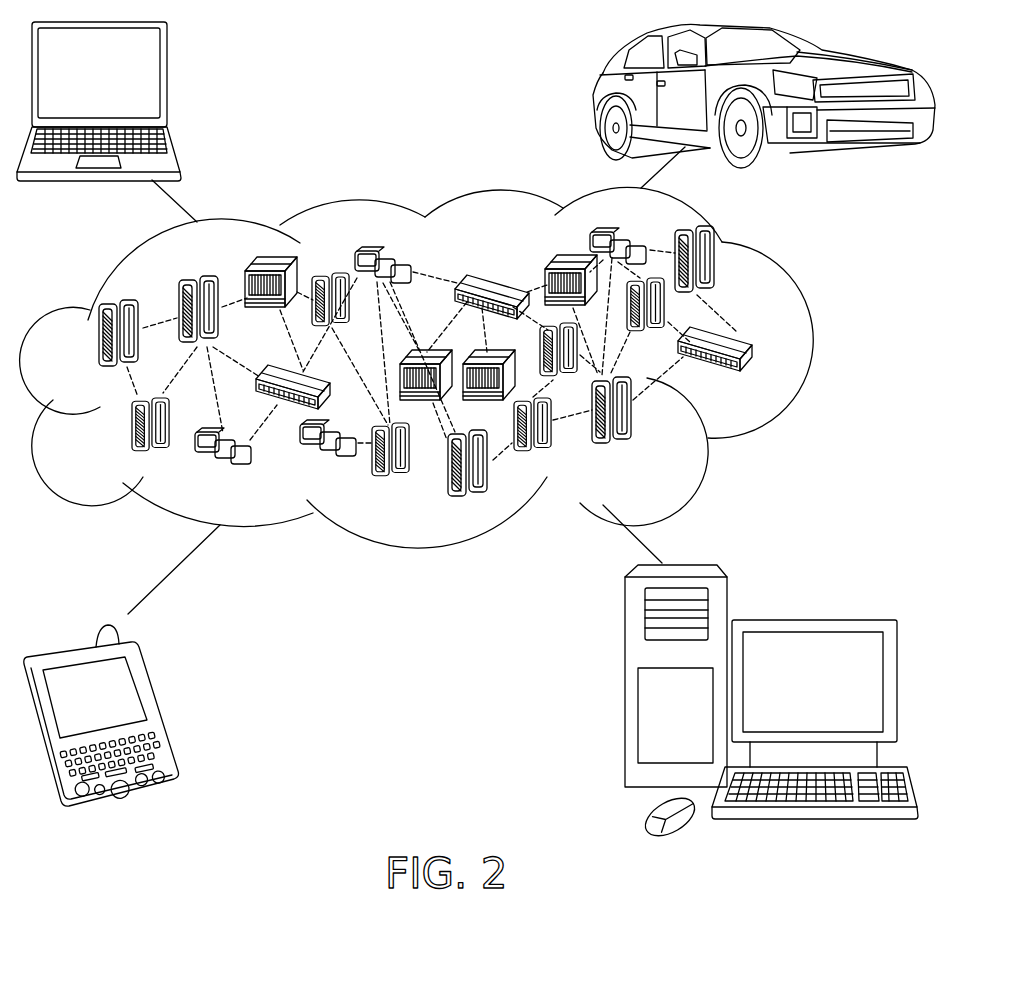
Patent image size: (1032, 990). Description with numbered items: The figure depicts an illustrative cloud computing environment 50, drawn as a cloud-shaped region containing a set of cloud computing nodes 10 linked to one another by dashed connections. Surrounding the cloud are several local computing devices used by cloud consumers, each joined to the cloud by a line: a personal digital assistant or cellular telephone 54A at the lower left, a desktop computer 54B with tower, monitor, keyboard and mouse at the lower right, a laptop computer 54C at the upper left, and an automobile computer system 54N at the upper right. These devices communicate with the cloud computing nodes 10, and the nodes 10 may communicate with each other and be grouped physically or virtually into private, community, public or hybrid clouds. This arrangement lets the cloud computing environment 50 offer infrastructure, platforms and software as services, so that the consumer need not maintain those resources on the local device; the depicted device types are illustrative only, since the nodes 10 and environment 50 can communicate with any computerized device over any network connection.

The cloud computing node 10 is at (762, 374).
The cloud computing environment 50 is at (810, 343).
The personal digital assistant or cellular telephone 54A is at (158, 708).
The desktop computer 54B is at (810, 621).
The laptop computer 54C is at (165, 82).
The automobile computer system 54N is at (593, 96).